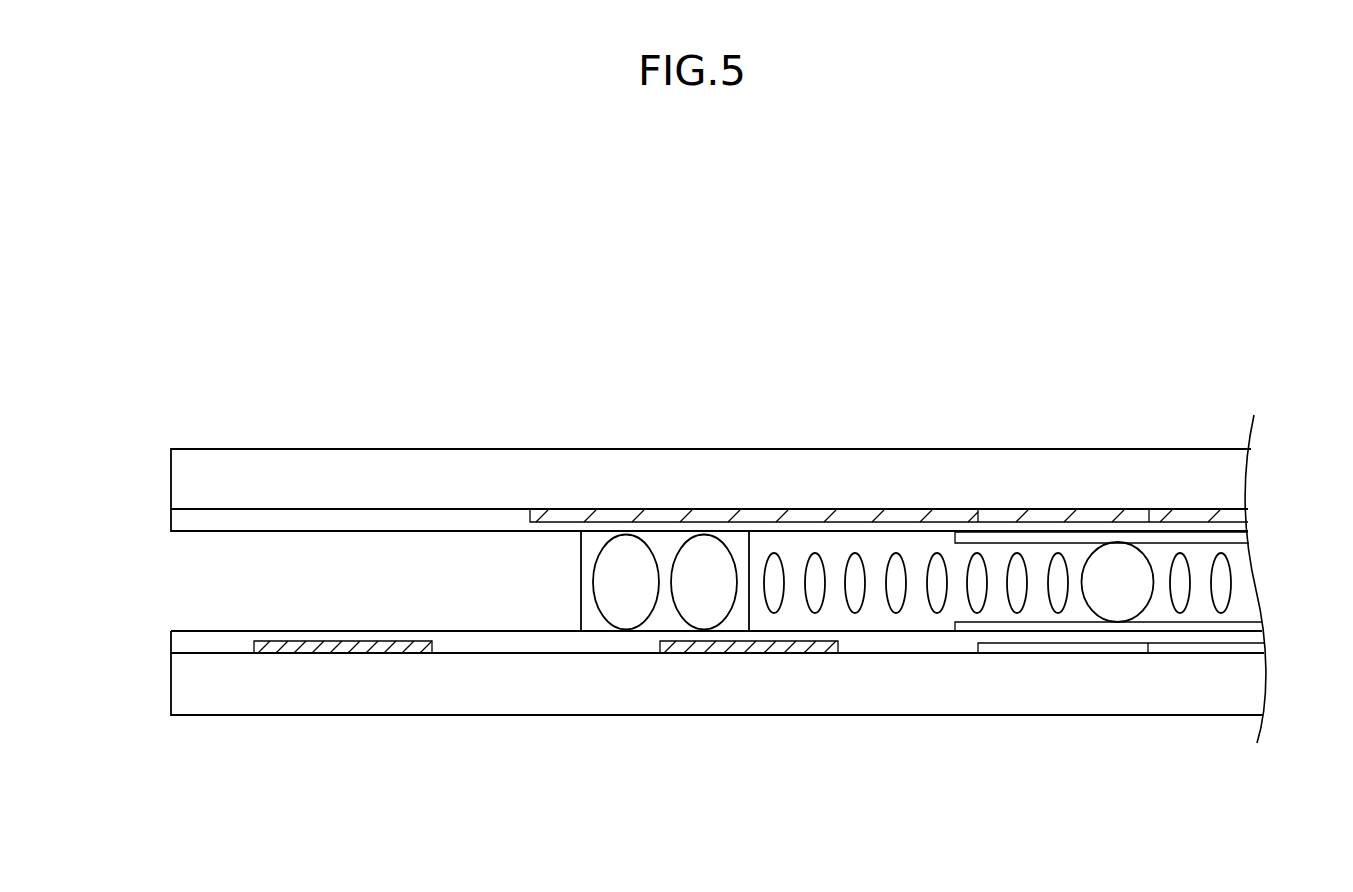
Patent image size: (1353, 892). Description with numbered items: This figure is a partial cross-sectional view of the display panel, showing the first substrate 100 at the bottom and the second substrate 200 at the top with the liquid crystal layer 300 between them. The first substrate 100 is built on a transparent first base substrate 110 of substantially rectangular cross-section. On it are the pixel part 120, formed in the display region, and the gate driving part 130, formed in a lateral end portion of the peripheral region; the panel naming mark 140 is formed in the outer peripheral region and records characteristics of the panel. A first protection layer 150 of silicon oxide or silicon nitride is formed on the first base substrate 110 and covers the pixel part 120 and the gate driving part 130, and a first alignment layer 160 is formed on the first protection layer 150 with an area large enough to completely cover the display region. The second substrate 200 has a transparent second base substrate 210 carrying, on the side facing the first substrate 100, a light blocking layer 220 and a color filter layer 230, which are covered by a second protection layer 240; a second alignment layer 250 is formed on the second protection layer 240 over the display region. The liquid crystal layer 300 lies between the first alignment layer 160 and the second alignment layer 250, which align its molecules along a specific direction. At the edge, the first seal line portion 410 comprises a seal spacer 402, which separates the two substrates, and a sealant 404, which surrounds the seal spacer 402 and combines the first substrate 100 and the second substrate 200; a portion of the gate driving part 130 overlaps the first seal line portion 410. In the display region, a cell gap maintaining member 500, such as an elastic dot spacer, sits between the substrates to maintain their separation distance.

The first substrate 100 is at (156, 671).
The first base substrate 110 is at (908, 688).
The pixel part 120 is at (1032, 650).
The gate driving part 130 is at (750, 650).
The panel naming mark 140 is at (345, 648).
The first protection layer 150 is at (540, 645).
The first alignment layer 160 is at (1112, 629).
The second substrate 200 is at (156, 482).
The second base substrate 210 is at (792, 476).
The light blocking layer 220 is at (881, 513).
The color filter layer 230 is at (1038, 517).
The second protection layer 240 is at (1114, 527).
The second alignment layer 250 is at (1188, 537).
The liquid crystal layer 300 is at (1242, 582).
The seal spacer 402 is at (624, 547).
The sealant 404 is at (664, 545).
The first seal line portion 410 is at (720, 366).
The cell gap maintaining member 500 is at (1132, 604).